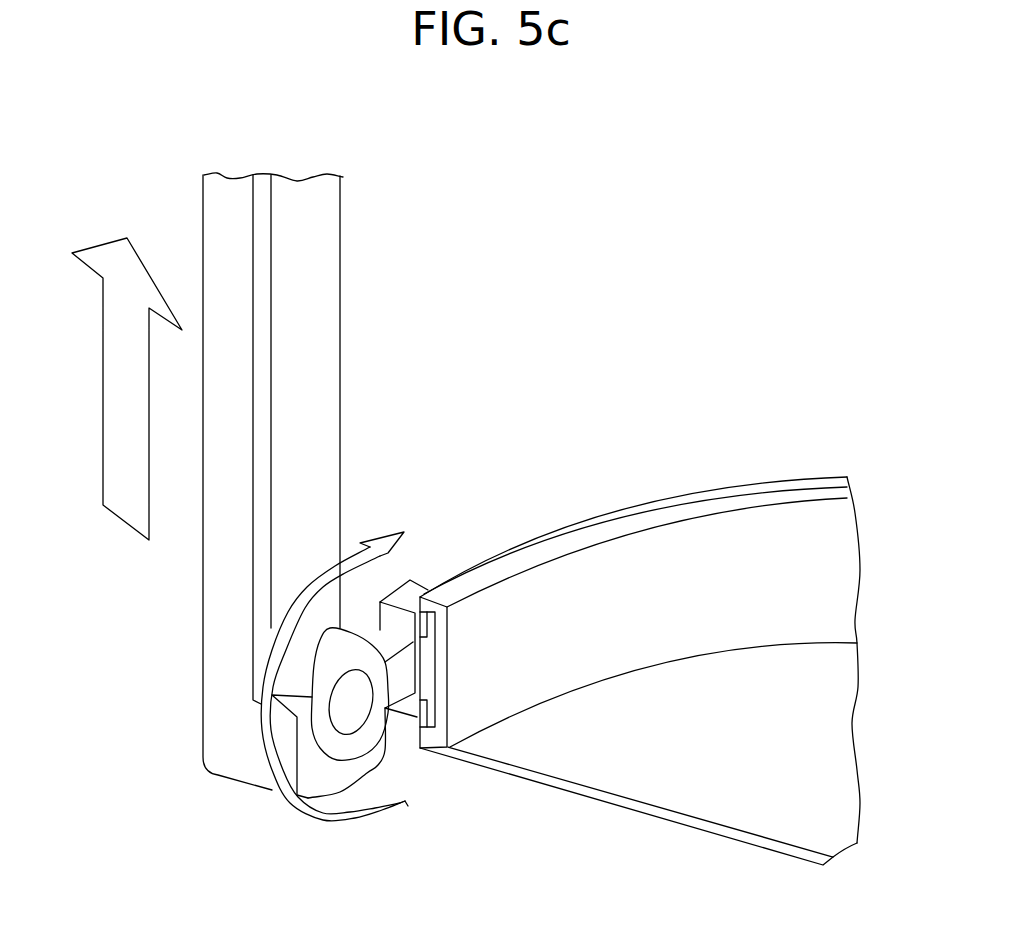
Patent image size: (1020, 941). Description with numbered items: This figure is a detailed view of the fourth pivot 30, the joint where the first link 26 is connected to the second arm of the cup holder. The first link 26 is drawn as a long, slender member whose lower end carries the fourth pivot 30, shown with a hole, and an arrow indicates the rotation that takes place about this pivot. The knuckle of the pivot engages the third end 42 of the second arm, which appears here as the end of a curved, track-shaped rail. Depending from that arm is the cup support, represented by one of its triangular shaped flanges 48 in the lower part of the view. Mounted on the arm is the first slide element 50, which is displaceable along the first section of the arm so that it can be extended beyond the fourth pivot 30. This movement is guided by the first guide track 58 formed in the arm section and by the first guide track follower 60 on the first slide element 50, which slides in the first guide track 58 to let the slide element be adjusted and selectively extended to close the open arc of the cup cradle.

The first link 26 is at (319, 341).
The fourth pivot 30 is at (407, 553).
The third end 42 is at (397, 612).
The first slide element 50 is at (657, 618).
The triangular shaped flanges 48 is at (753, 755).
The first guide track 58 is at (427, 662).
The first guide track follower 60 is at (423, 735).